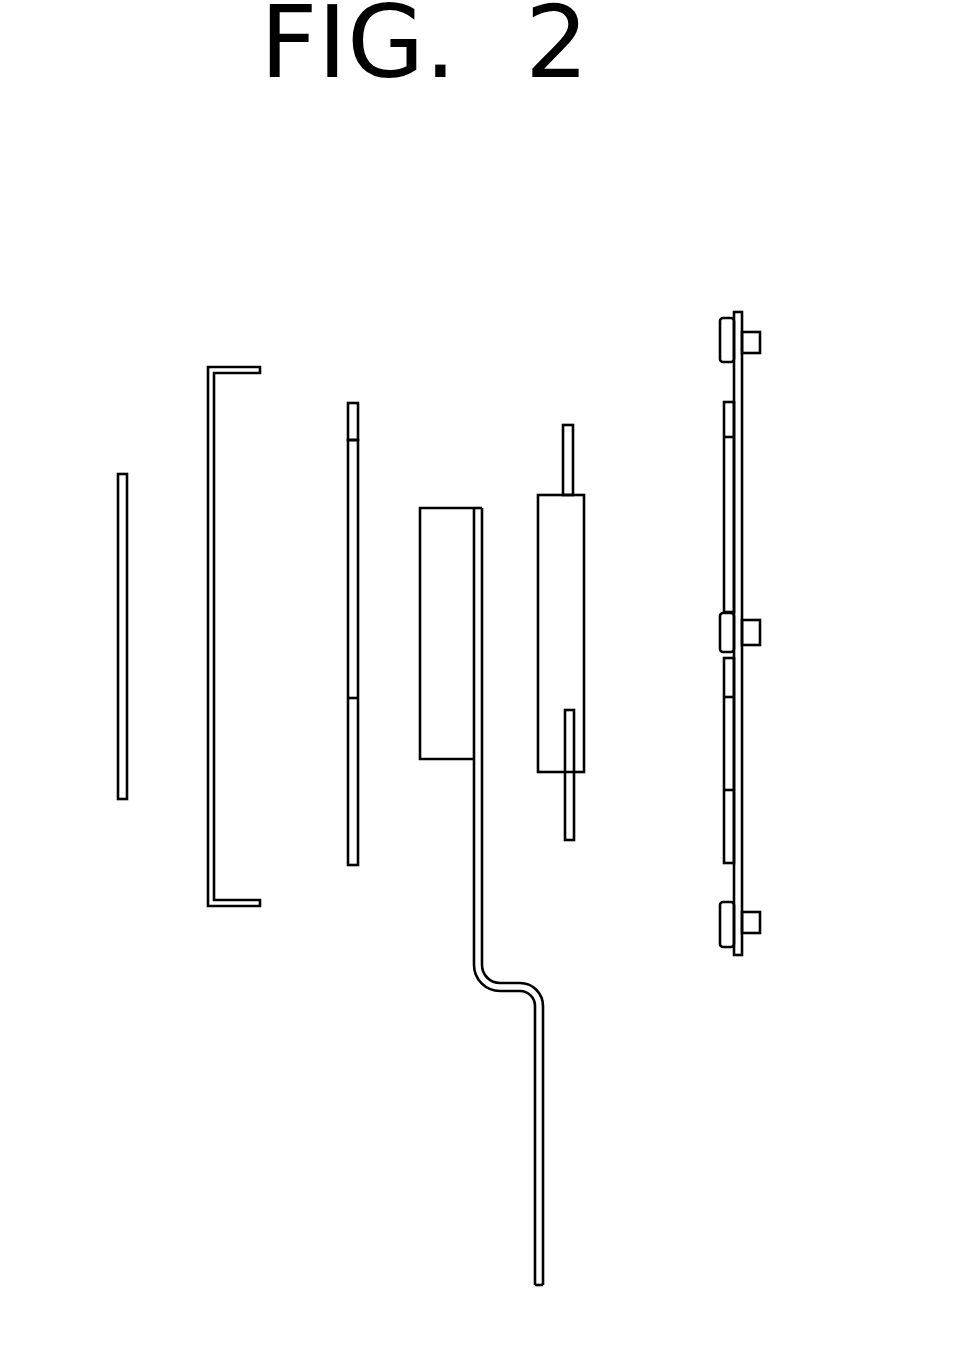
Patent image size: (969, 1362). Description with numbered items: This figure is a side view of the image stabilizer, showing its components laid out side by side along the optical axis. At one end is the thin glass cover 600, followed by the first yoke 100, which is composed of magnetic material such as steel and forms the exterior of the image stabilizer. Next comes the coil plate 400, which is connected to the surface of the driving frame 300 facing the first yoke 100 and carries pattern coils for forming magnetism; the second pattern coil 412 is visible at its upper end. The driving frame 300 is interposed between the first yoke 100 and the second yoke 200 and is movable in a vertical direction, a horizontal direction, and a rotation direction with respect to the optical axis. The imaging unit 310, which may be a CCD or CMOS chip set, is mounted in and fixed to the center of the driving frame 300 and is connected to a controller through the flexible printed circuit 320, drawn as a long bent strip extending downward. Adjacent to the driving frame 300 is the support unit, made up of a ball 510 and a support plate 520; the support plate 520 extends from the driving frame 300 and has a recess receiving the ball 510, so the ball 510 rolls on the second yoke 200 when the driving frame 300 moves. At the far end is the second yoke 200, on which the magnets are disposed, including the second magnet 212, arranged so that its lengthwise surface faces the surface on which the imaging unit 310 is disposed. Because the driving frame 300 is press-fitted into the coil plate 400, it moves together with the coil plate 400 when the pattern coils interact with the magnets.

The first yoke 100 is at (212, 365).
The second yoke 200 is at (742, 877).
The second magnet 212 is at (742, 500).
The driving frame 300 is at (585, 673).
The imaging unit 310 is at (438, 508).
The Flexible Printed Circuit (FPC) 320 is at (537, 1110).
The coil plate 400 is at (352, 865).
The second pattern coil 412 is at (358, 460).
The ball 510 is at (563, 423).
The support plate 520 is at (573, 458).
The glass cover 600 is at (122, 470).